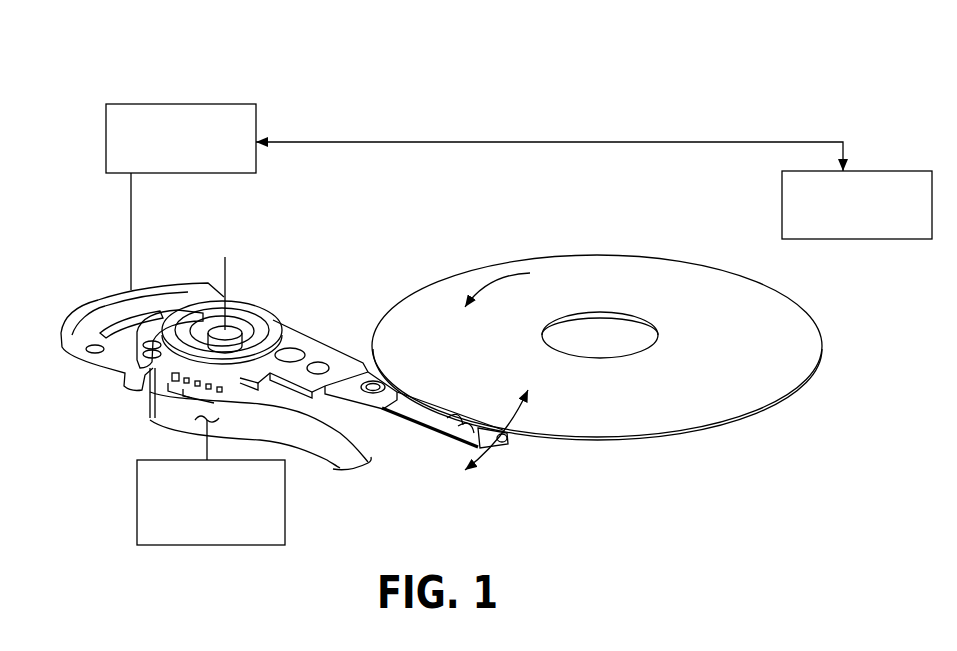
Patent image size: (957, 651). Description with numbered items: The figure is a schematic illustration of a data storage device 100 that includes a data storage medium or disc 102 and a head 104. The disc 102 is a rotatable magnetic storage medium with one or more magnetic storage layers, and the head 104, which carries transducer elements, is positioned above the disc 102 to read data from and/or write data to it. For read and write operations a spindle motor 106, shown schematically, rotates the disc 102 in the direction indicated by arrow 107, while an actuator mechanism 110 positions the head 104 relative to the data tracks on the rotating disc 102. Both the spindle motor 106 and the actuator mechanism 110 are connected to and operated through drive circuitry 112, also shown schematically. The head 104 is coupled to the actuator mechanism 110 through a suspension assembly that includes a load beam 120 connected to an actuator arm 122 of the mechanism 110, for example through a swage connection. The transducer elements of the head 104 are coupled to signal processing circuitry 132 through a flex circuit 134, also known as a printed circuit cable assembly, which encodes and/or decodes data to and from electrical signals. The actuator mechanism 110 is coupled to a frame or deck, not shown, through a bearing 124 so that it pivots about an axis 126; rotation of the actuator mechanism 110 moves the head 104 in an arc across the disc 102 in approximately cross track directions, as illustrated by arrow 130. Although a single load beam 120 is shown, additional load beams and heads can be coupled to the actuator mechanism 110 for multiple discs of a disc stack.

The data storage device 100 is at (738, 105).
The data storage medium or disc 102 is at (699, 289).
The head 104 is at (506, 441).
The spindle motor 106 is at (896, 171).
The arrow 107 is at (494, 281).
The actuator mechanism 110 is at (249, 286).
The drive circuitry 112 is at (225, 104).
The load beam 120 is at (401, 403).
The actuator arm 122 is at (324, 331).
The bearing 124 is at (222, 330).
The axis 126 is at (224, 277).
The arrow 130 is at (512, 421).
The signal processing circuitry 132 is at (137, 500).
The flex circuit 134 is at (270, 430).